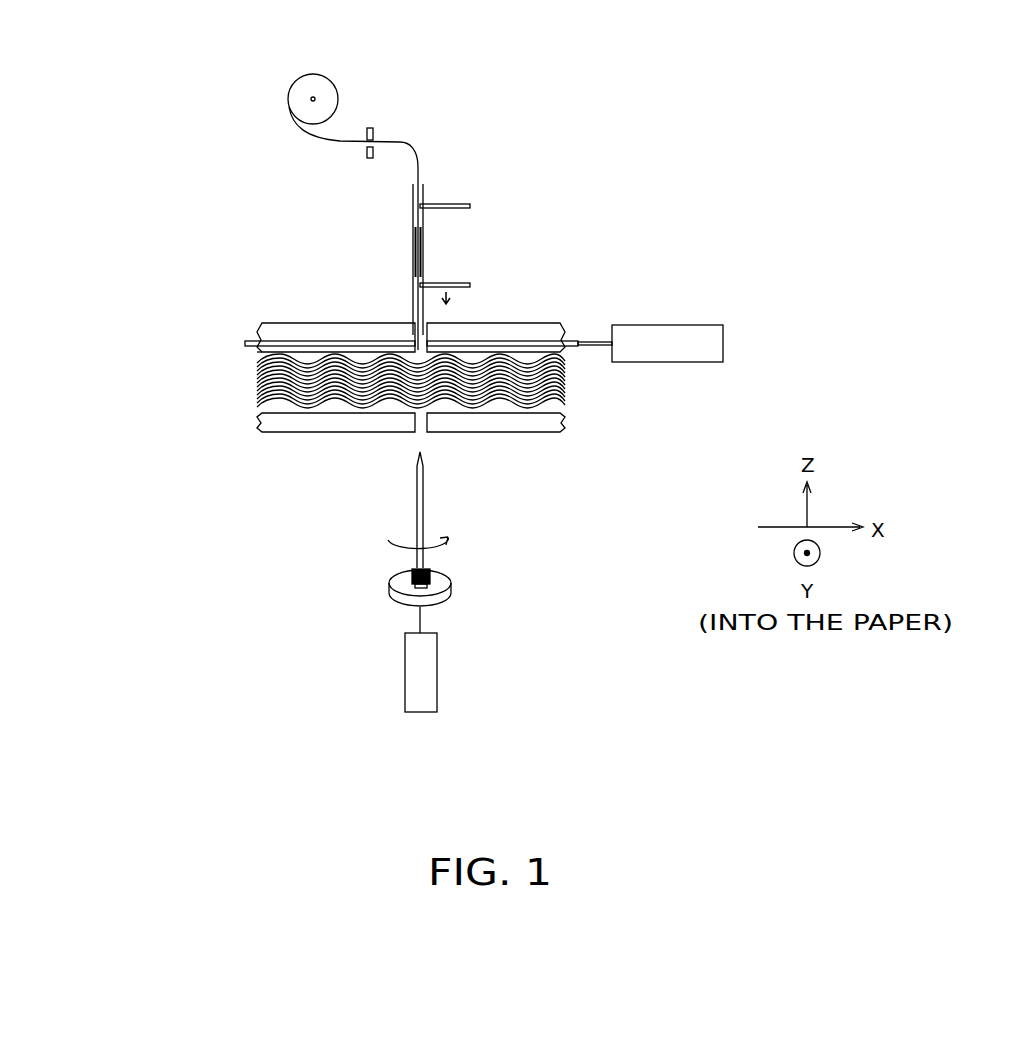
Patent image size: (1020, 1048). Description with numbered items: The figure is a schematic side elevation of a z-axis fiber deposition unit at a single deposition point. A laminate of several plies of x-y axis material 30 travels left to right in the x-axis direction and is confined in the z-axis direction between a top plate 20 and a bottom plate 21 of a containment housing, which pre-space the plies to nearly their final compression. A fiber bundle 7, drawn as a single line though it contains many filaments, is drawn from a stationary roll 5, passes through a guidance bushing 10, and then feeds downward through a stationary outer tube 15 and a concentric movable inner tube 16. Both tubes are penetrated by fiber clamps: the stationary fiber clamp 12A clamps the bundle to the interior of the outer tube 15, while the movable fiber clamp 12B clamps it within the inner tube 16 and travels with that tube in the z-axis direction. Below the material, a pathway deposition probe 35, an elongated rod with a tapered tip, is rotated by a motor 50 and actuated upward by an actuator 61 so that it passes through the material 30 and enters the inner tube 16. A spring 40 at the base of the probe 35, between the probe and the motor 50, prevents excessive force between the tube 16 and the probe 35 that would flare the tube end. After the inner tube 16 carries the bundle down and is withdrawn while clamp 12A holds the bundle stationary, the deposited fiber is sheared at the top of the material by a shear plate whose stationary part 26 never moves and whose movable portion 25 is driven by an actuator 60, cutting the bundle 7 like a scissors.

The stationary roll 5 is at (338, 96).
The fiber bundle 7 is at (320, 142).
The guidance bushing 10 is at (370, 124).
The fiber clamp 12A is at (470, 207).
The fiber clamp 12B is at (470, 285).
The stationary outer tube 15 is at (413, 193).
The movable inner tube 16 is at (427, 306).
The top plate 20 is at (527, 323).
The bottom plate 21 is at (575, 423).
The movable portion of shear plate 25 is at (245, 343).
The stationary part of shear plate 26 is at (253, 352).
The x-y axis material 30 is at (570, 380).
The pathway deposition probe 35 is at (432, 486).
The spring 40 is at (412, 578).
The motor 50 is at (455, 587).
The actuator 60 is at (685, 325).
The actuator 61 is at (403, 673).